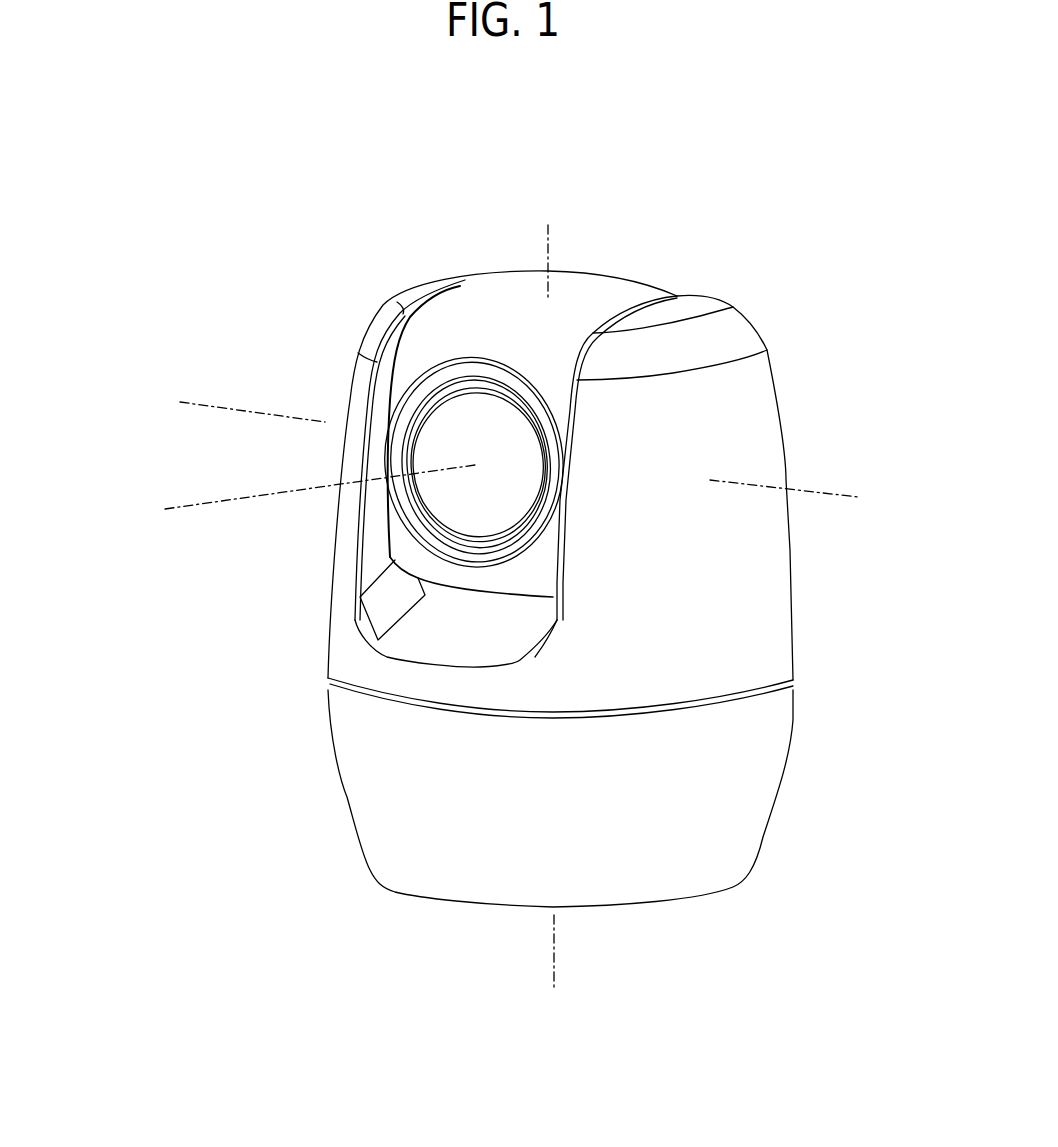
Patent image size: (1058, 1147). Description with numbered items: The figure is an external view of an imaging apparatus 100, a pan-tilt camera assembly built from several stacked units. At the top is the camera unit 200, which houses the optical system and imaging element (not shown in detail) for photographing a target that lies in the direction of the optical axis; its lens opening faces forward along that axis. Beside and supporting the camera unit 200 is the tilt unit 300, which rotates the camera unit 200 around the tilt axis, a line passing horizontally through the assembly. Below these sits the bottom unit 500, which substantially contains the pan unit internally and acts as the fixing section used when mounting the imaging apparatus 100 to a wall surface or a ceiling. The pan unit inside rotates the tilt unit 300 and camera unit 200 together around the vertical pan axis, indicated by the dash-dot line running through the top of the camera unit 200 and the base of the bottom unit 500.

The imaging apparatus 100 is at (892, 209).
The camera unit 200 is at (645, 252).
The tilt unit 300 is at (797, 413).
The bottom unit 500 is at (820, 737).